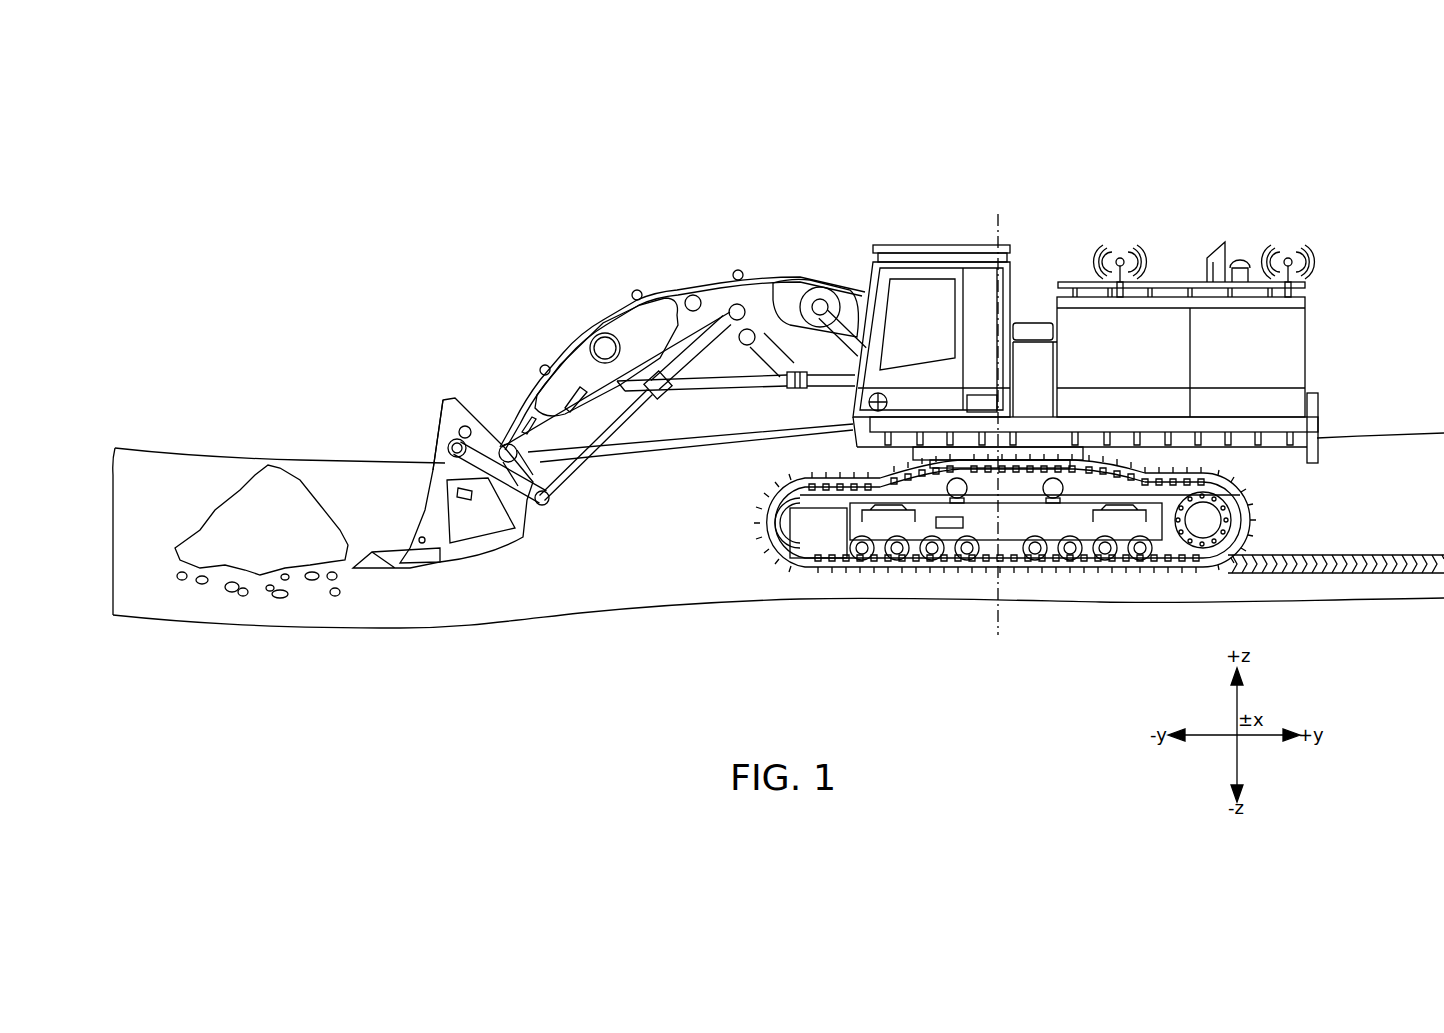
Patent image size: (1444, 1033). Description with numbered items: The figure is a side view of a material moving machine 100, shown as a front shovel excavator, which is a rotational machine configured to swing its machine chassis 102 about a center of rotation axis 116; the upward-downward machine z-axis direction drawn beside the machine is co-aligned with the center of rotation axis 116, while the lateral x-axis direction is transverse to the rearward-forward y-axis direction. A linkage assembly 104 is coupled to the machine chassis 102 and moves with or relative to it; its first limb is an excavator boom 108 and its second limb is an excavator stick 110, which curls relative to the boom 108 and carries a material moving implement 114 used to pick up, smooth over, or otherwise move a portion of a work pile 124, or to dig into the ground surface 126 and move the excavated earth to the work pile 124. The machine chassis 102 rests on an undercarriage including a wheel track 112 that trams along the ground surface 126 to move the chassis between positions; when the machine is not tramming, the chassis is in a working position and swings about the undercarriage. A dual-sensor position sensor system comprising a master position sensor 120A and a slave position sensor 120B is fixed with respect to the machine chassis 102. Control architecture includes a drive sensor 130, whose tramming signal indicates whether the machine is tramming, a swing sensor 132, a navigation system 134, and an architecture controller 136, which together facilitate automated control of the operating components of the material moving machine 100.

The material moving machine 100 is at (1072, 344).
The machine chassis 102 is at (1310, 357).
The linkage assembly 104 is at (609, 372).
The excavator boom 108 is at (830, 268).
The excavator stick 110 is at (560, 352).
The wheel track 112 is at (1036, 555).
The material moving implement 114 is at (440, 460).
The center of rotation axis 116 is at (1003, 227).
The master position sensor 120A is at (1145, 230).
The slave position sensor 120B is at (1315, 230).
The work pile 124 is at (283, 533).
The ground surface 126 is at (1350, 573).
The drive sensor 130 is at (940, 530).
The swing sensor 132 is at (1012, 458).
The navigation system 134 is at (857, 408).
The architecture controller 136 is at (993, 393).